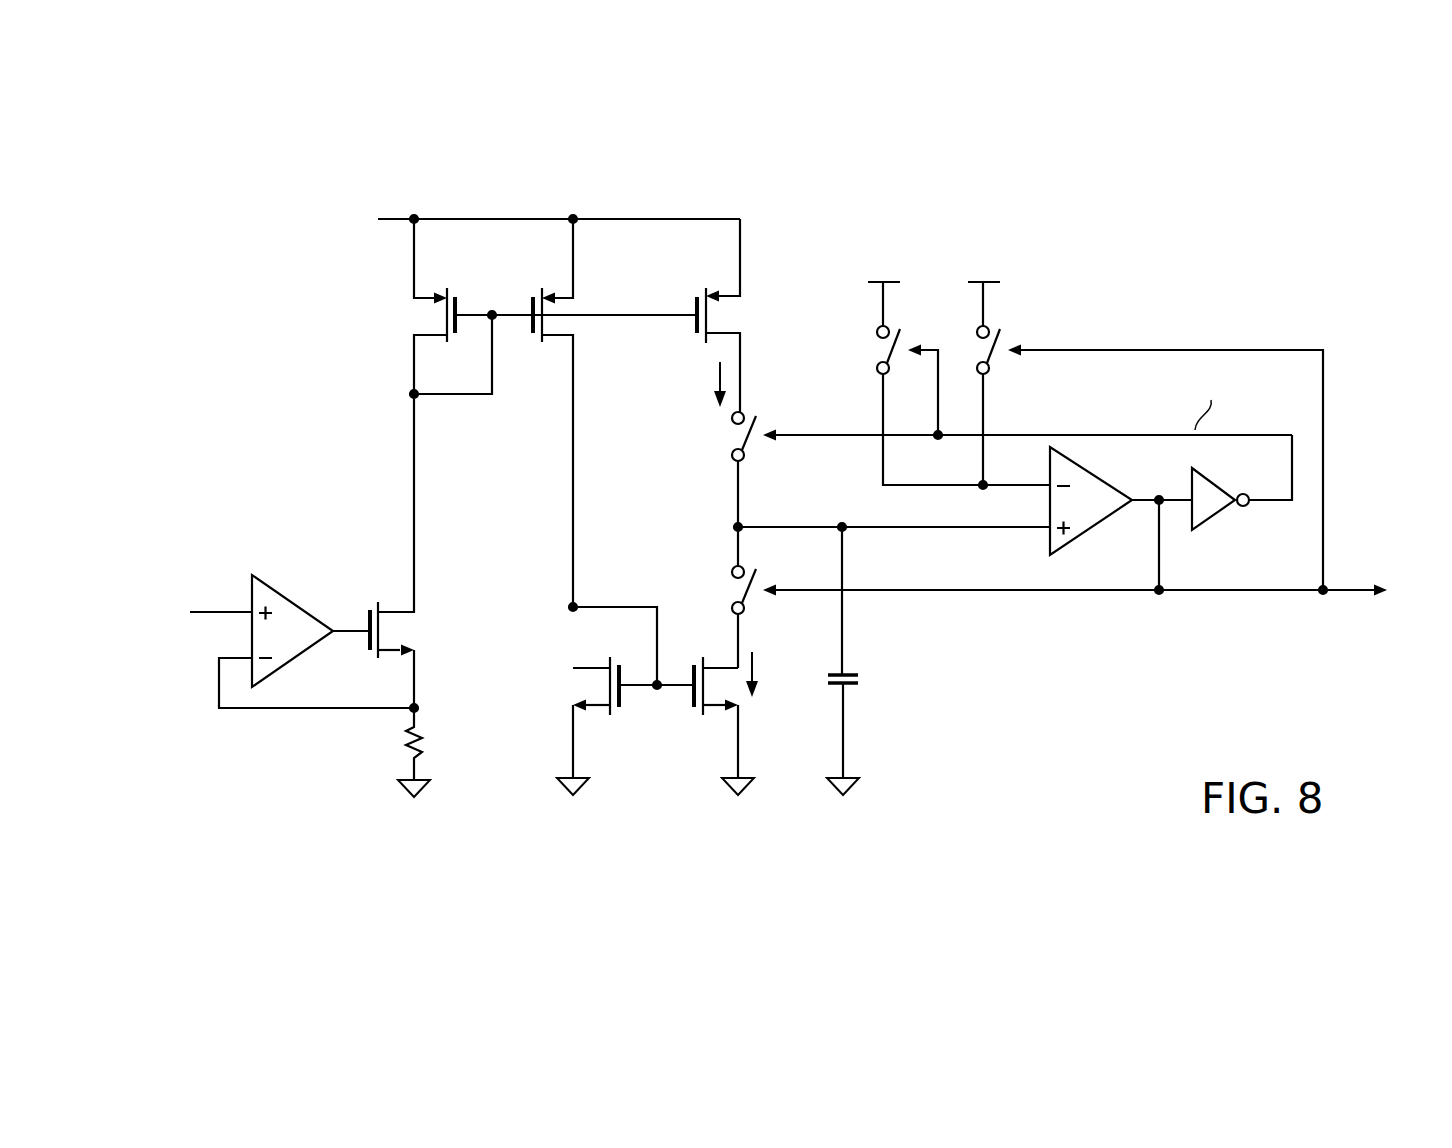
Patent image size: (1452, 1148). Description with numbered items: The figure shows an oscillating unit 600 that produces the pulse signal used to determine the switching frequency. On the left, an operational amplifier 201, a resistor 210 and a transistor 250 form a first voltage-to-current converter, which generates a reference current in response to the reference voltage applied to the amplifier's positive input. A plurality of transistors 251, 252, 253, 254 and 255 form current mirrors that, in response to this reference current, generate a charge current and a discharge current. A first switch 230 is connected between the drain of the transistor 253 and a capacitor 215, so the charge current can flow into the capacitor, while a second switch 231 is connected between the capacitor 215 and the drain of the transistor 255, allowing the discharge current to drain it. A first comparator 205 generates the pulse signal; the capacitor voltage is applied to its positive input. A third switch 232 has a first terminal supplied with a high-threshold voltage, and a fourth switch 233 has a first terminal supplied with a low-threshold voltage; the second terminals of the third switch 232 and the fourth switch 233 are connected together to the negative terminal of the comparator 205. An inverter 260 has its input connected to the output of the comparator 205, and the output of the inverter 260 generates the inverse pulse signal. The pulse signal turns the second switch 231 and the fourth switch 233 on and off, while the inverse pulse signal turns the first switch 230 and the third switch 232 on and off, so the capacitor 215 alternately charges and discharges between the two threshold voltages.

The oscillating unit 600 is at (1351, 227).
The operational amplifier 201 is at (295, 597).
The transistor 250 is at (414, 632).
The resistor 210 is at (430, 745).
The transistor 251 is at (410, 319).
The transistor 252 is at (582, 332).
The transistor 253 is at (740, 315).
The transistor 254 is at (573, 688).
The transistor 255 is at (703, 720).
The first switch 230 is at (726, 439).
The second switch 231 is at (726, 591).
The third switch 232 is at (872, 352).
The fourth switch 233 is at (1000, 371).
The first comparator 205 is at (1095, 535).
The inverter 260 is at (1210, 525).
The capacitor 215 is at (862, 681).